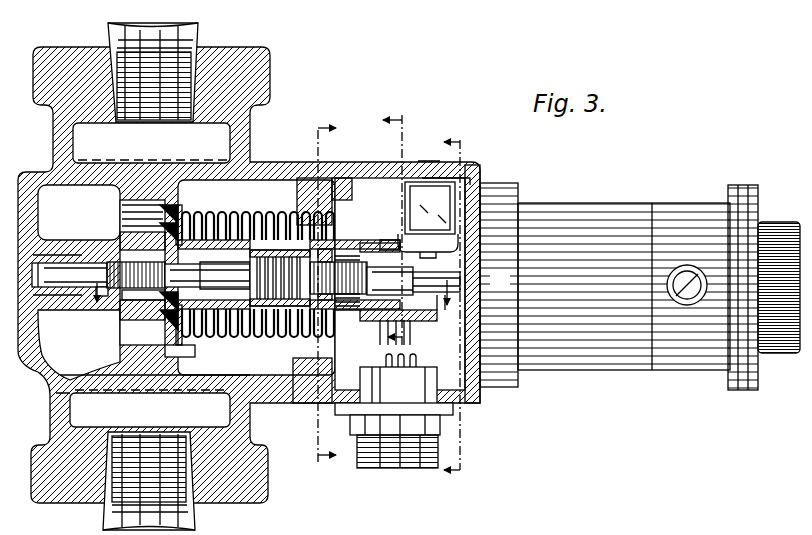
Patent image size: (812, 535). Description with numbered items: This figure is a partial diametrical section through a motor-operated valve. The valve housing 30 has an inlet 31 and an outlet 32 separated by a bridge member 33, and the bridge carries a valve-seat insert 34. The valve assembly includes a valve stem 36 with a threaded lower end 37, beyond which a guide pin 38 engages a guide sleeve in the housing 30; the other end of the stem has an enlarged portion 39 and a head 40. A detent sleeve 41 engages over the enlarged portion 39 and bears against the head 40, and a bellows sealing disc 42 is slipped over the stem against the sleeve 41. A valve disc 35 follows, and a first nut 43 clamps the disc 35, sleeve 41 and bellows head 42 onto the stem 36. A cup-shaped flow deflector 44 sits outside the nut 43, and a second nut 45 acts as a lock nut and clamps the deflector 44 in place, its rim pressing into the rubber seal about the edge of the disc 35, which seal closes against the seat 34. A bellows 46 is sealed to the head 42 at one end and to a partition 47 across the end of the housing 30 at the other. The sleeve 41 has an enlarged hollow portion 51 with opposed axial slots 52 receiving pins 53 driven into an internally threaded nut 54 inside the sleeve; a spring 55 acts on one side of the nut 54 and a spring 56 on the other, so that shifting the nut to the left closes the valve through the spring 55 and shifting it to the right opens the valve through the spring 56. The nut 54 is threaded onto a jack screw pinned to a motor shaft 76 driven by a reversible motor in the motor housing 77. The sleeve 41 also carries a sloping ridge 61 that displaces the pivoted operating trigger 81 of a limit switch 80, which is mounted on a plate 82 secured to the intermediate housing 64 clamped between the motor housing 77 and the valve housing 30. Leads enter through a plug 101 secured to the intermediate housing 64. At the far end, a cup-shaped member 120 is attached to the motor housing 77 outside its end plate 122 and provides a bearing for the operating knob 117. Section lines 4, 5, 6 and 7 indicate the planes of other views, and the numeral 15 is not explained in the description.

The section line 4- 4 is at (464, 308).
The section line 5- 5 is at (316, 292).
The section line 6- 6 is at (403, 227).
The section line 7- 7 is at (271, 302).
The stem end 15 is at (420, 325).
The valve housing 30 is at (252, 132).
The inlet 31 is at (203, 42).
The outlet 32 is at (197, 512).
The bridge member 33 is at (147, 372).
The valve-seat insert 34 is at (122, 342).
The valve disc 35 is at (165, 307).
The valve stem 36 is at (190, 212).
The threaded lower end 37 is at (112, 262).
The guide pin 38 is at (56, 272).
The enlarged portion 39 is at (220, 215).
The head 40 is at (240, 226).
The detent sleeve 41 is at (216, 337).
The bellows sealing disc 42 is at (195, 356).
The first nut 43 is at (140, 307).
The flow deflector 44 is at (100, 313).
The second nut 45 is at (122, 245).
The bellows 46 is at (221, 332).
The partition 47 is at (343, 215).
The enlarged hollow portion 51 is at (327, 329).
The opposed slots 52 is at (350, 245).
The pins 53 is at (328, 241).
The internally threaded nut 54 is at (360, 236).
The spring 55 is at (276, 213).
The spring 56 is at (366, 246).
The ridge 61 is at (390, 309).
The intermediate housing 64 is at (482, 172).
The motor shaft 76 is at (499, 285).
The motor housing 77 is at (607, 212).
The limit switch 80 is at (420, 188).
The operating trigger 81 is at (405, 244).
The plate 82 is at (427, 160).
The plug 101 is at (395, 466).
The operating knob 117 is at (778, 222).
The cup-shaped member 120 is at (742, 200).
The end plate 122 is at (728, 195).